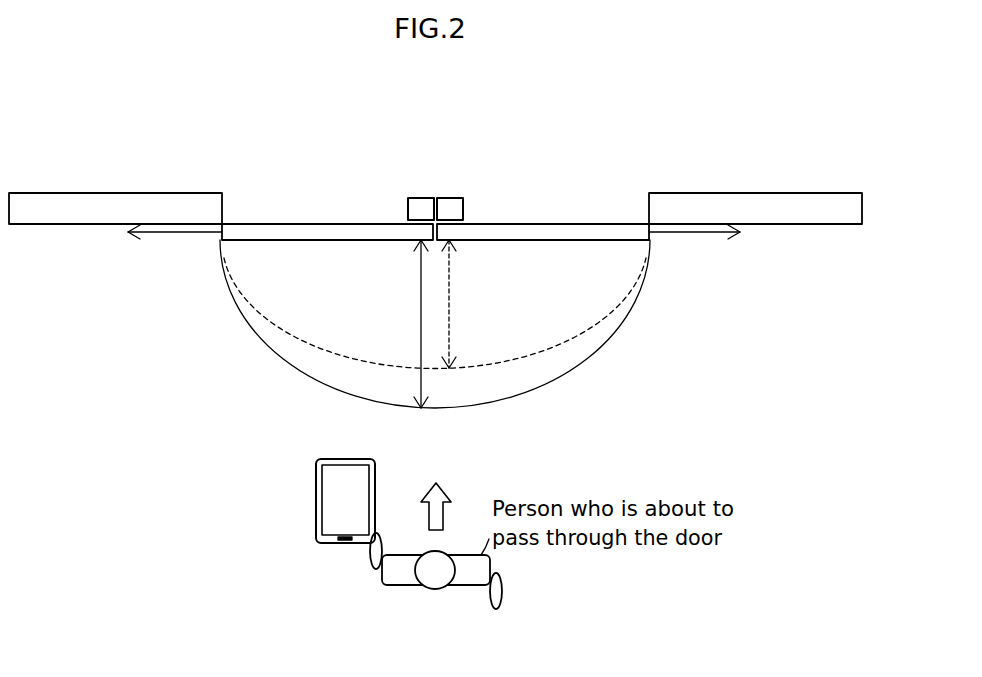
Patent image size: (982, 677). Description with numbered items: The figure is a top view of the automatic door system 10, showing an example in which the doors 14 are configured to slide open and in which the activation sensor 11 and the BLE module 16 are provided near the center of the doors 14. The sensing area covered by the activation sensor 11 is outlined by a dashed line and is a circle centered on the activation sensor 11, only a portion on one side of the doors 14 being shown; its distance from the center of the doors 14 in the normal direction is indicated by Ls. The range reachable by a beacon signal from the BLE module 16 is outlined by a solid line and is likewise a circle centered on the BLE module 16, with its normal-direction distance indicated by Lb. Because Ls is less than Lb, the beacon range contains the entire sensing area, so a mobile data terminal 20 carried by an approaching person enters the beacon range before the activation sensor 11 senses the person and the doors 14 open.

The automatic door system 10 is at (681, 127).
The activation sensor 11 is at (458, 206).
The doors 14 is at (330, 230).
The BLE module 16 is at (418, 206).
The mobile data terminal 20 is at (316, 496).